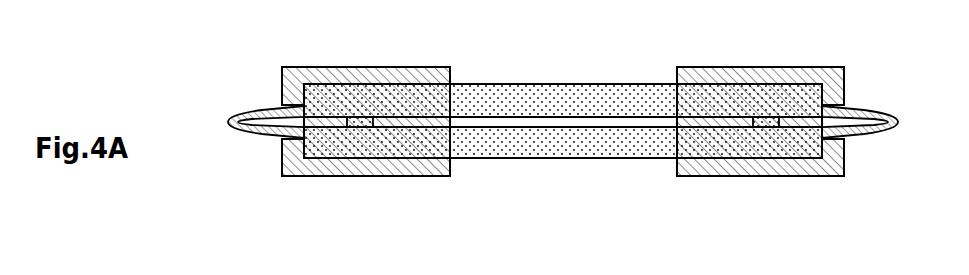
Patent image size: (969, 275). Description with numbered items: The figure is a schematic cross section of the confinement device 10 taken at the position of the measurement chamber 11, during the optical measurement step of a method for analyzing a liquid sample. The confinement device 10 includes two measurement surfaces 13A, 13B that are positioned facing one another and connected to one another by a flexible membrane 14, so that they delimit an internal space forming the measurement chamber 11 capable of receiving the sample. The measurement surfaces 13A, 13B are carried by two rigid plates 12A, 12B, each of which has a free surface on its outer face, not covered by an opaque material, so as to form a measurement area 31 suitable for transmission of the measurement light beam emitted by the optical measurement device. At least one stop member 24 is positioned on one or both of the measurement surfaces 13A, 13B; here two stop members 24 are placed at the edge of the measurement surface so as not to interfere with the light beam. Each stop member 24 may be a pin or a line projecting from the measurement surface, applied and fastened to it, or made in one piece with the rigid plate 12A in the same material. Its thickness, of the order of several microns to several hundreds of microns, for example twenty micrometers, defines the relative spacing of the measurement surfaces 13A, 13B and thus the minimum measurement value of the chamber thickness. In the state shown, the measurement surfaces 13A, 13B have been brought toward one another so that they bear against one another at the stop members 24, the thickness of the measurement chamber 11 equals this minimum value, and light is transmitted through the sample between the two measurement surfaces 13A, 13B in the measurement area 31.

The confinement device 10 is at (263, 61).
The measurement chamber 11 is at (527, 122).
The rigid plate 12A is at (568, 168).
The rigid plate 12B is at (561, 77).
The measurement surface 13A is at (493, 118).
The measurement surface 13B is at (490, 117).
The flexible membrane 14 is at (236, 117).
The stop member 24 is at (362, 127).
The measurement area 31 is at (601, 62).